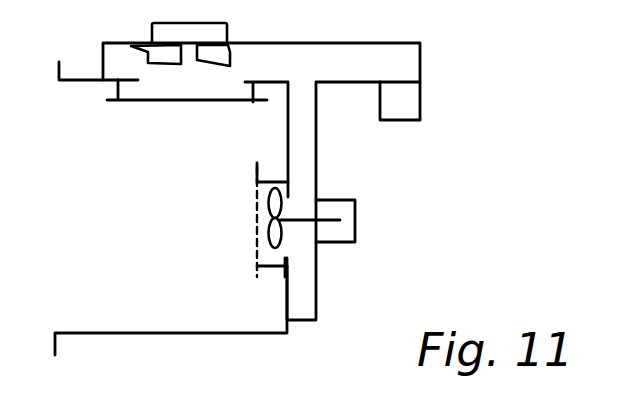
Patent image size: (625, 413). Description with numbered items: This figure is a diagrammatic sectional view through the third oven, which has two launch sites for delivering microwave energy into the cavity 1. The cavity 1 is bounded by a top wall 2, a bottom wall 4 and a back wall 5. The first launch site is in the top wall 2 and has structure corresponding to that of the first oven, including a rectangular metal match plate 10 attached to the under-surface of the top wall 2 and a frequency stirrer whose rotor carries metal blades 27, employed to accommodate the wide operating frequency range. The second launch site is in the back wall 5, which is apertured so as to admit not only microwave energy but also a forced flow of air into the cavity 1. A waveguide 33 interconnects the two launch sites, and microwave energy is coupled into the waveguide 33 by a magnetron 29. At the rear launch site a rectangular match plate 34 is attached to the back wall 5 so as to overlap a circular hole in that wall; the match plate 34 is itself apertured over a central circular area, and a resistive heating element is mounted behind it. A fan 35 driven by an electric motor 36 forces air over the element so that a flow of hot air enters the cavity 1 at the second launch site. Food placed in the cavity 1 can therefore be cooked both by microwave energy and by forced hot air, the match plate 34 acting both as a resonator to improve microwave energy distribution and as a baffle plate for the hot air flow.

The cavity 1 is at (130, 222).
The top wall 2 is at (67, 83).
The bottom wall 4 is at (80, 332).
The back wall 5 is at (287, 120).
The match plate 10 is at (173, 101).
The metal blades 27 is at (103, 42).
The magnetron 29 is at (400, 108).
The waveguide 33 is at (307, 153).
The match plate 34 is at (255, 267).
The fan 35 is at (280, 237).
The electric motor 36 is at (348, 228).